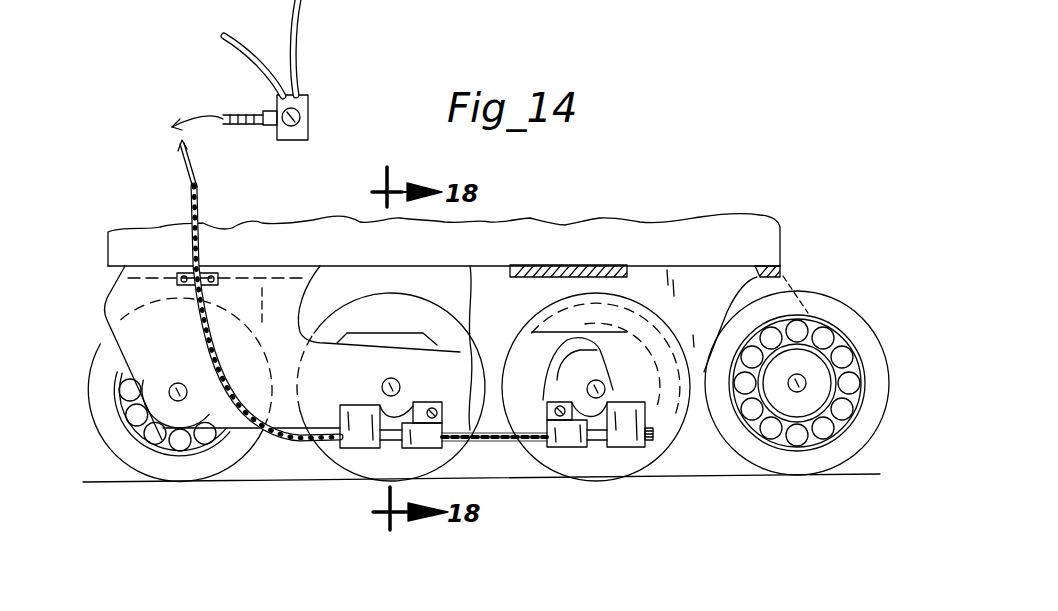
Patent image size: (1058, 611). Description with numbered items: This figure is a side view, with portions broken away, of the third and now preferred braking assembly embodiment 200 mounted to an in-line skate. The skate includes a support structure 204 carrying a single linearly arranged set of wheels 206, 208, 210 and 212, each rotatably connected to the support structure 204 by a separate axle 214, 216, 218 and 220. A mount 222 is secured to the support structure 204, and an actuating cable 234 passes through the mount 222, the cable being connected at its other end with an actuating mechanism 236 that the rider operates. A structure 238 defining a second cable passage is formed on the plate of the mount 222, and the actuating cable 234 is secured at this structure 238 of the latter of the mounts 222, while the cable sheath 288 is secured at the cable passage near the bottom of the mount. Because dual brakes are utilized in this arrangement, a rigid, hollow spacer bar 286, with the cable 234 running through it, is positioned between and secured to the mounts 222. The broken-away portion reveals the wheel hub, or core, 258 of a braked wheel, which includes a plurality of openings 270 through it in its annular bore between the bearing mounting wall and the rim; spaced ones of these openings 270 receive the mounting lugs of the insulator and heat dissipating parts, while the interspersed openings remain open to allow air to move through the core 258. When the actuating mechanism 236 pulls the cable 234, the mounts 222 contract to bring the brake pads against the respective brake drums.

The braking assembly embodiment 200 is at (555, 524).
The support structure 204 is at (640, 303).
The wheel 206 is at (797, 376).
The wheel 208 is at (675, 445).
The wheel 210 is at (330, 443).
The wheel 212 is at (109, 333).
The axle 214 is at (800, 374).
The axle 216 is at (598, 380).
The axle 218 is at (391, 378).
The axle 220 is at (170, 398).
The mount 222 is at (367, 448).
The actuating cable 234 is at (195, 190).
The actuating mechanism 236 is at (299, 121).
The structure defining second cable passage 238 is at (640, 448).
The wheel hub 258 is at (773, 440).
The openings 270 is at (825, 416).
The spacer bar 286 is at (497, 442).
The cable sheath 288 is at (193, 212).